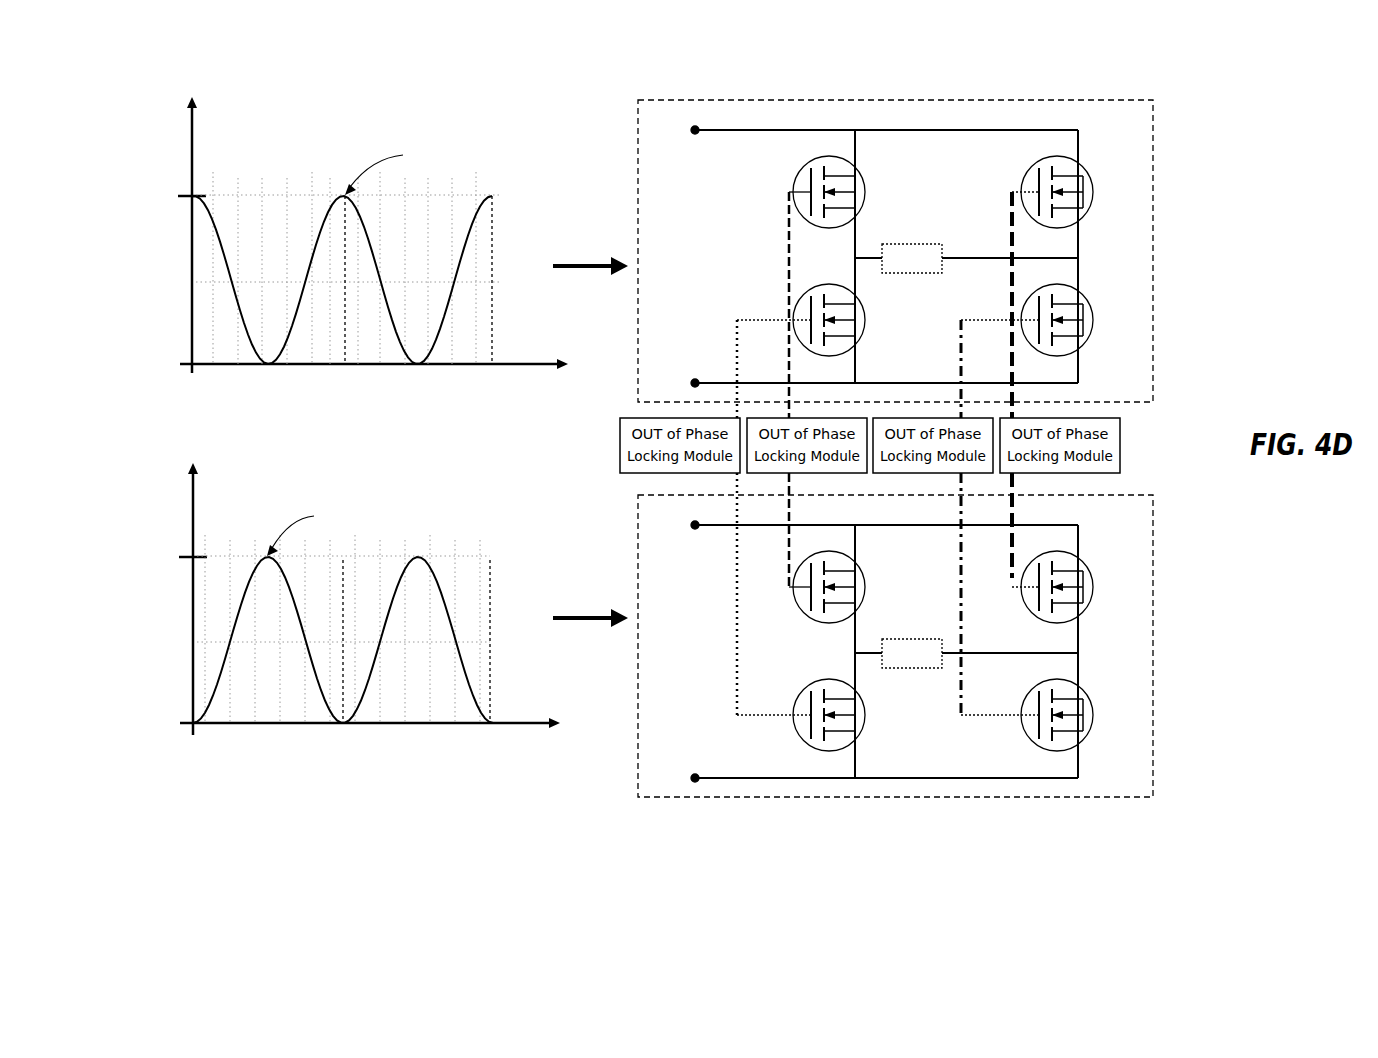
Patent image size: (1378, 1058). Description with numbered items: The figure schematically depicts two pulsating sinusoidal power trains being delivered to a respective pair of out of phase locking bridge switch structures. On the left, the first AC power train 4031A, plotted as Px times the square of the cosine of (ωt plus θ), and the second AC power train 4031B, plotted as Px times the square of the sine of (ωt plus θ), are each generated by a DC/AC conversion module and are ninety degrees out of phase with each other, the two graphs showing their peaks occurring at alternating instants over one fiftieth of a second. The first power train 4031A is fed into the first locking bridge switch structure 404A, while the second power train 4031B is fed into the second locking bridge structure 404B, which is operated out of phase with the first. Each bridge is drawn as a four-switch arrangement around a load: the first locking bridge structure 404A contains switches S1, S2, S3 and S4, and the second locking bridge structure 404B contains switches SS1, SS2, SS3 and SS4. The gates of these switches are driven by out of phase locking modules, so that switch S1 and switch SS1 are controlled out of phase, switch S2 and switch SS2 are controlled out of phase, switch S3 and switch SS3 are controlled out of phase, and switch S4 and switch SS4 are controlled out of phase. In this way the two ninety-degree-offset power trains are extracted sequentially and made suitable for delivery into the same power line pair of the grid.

The first AC power train 4031A is at (383, 126).
The second AC power train 4031B is at (325, 482).
The first locking bridge switch structure 404A is at (871, 123).
The second locking bridge structure 404B is at (871, 518).
The switch S1 is at (827, 190).
The switch S2 is at (1027, 318).
The switch S3 is at (1052, 190).
The switch S4 is at (801, 318).
The switch SS1 is at (827, 581).
The switch SS2 is at (1027, 710).
The switch SS3 is at (1052, 581).
The switch SS4 is at (801, 710).